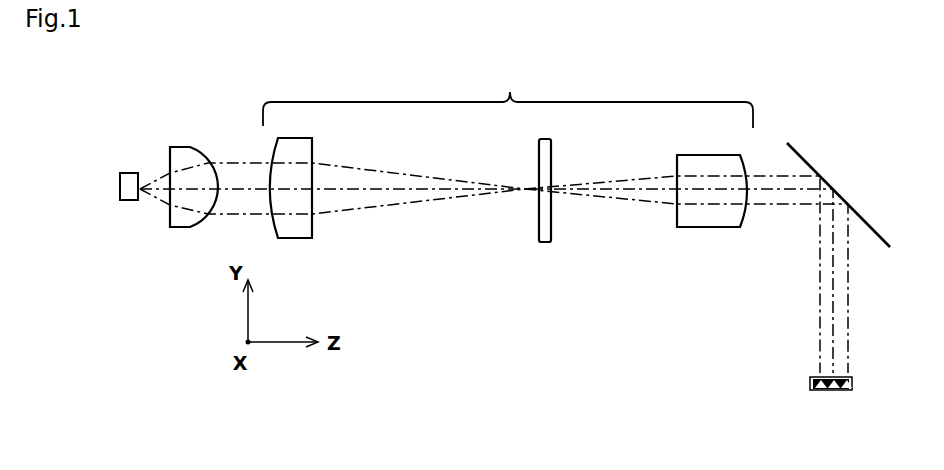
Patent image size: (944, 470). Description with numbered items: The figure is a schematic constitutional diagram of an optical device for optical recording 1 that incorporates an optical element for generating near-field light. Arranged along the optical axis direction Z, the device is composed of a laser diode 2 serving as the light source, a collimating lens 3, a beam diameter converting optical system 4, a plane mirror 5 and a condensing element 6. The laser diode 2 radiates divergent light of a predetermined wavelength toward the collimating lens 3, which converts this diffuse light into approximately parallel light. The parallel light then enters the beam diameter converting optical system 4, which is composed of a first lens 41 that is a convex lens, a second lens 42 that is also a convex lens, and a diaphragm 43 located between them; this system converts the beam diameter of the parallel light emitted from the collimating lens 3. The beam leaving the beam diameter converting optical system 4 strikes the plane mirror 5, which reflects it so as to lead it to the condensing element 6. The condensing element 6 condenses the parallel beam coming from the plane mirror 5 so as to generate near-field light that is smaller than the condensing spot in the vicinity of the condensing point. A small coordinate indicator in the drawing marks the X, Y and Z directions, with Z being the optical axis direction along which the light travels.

The optical device for optical recording 1 is at (282, 60).
The laser diode 2 is at (132, 171).
The collimating lens 3 is at (192, 146).
The beam diameter converting optical system 4 is at (508, 176).
The first lens 41 is at (312, 227).
The second lens 42 is at (707, 228).
The diaphragm 43 is at (538, 218).
The plane mirror 5 is at (802, 152).
The condensing element 6 is at (810, 384).